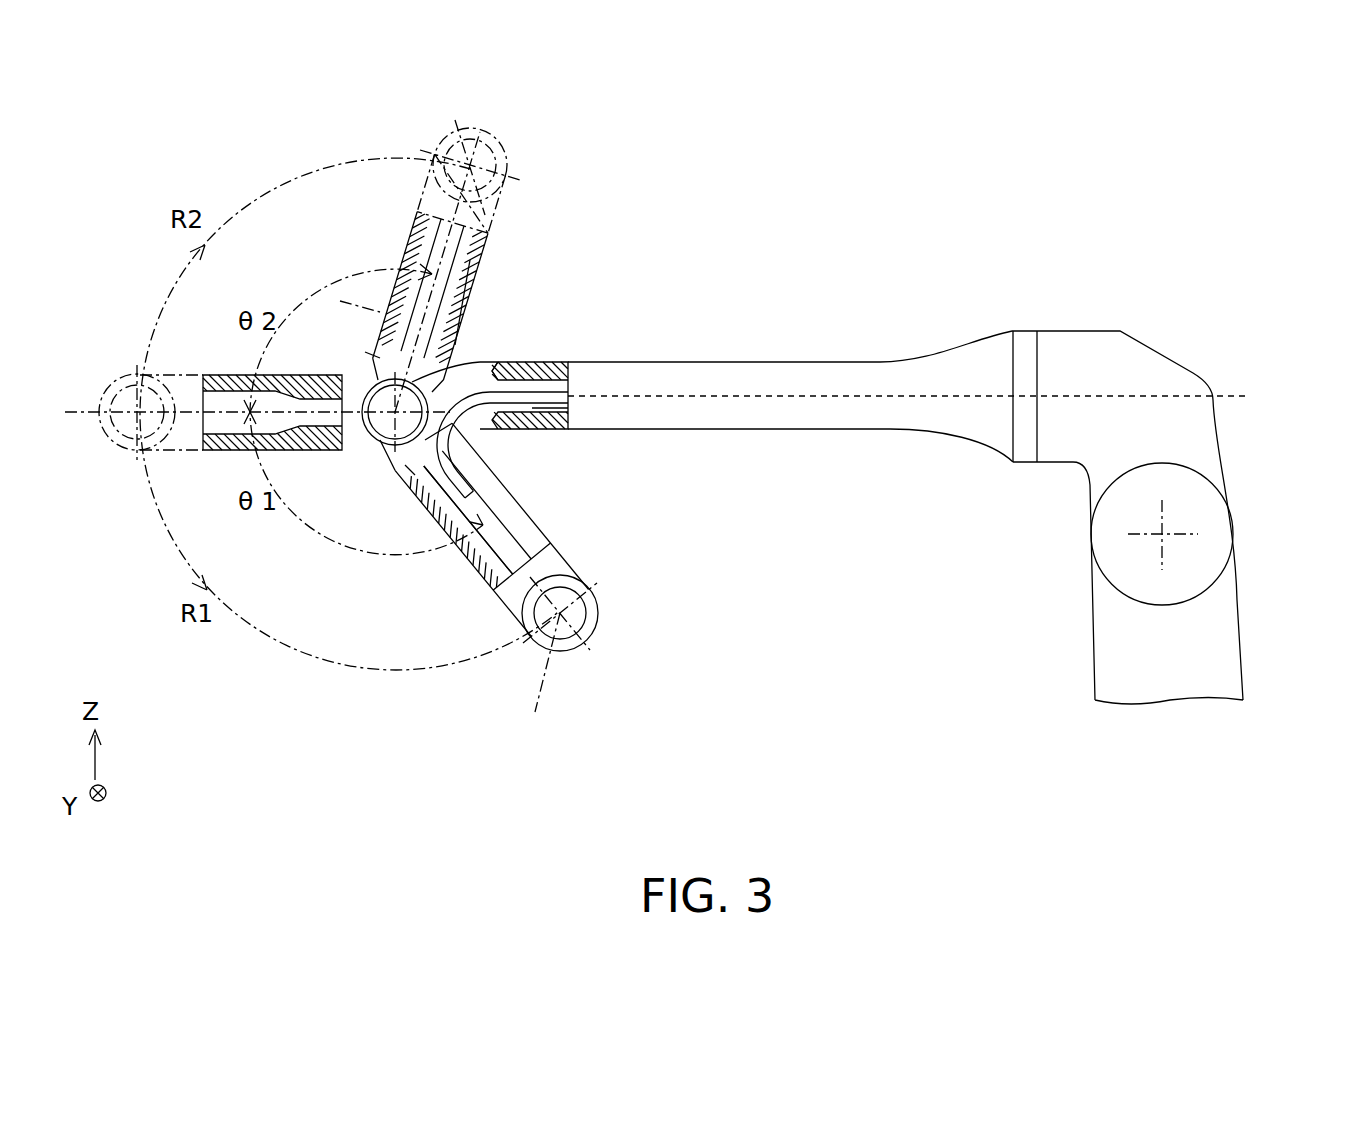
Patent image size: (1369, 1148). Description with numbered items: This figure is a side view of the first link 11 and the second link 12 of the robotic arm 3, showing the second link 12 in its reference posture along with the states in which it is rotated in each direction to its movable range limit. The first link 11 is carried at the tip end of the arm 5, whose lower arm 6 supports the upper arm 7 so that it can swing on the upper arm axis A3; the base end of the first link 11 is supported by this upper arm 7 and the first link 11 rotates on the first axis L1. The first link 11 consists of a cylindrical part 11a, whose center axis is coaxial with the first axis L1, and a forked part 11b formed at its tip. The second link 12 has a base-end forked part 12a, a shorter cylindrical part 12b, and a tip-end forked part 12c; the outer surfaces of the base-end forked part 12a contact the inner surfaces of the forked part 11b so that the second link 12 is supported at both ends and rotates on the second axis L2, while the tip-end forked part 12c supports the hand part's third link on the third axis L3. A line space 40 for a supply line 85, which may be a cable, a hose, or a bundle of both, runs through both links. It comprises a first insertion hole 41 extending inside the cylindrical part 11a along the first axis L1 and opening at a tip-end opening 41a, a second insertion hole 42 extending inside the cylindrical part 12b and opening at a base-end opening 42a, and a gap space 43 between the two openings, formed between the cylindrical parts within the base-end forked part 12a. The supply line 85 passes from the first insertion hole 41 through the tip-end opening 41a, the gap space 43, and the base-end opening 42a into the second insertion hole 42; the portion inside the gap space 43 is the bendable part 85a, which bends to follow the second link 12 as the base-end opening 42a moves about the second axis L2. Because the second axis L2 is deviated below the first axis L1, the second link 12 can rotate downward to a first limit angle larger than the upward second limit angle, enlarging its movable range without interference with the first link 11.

The robotic arm 3 is at (1227, 313).
The arm 5 is at (1305, 460).
The lower arm 6 is at (1240, 600).
The upper arm 7 is at (1215, 465).
The first link 11 is at (855, 360).
The cylindrical part 11a is at (745, 360).
The forked part 11b is at (482, 355).
The second link 12 is at (432, 226).
The base-end forked part 12a is at (385, 470).
The cylindrical part 12b is at (533, 513).
The tip-end forked part 12c is at (570, 560).
The line space 40 is at (497, 440).
The first insertion hole 41 is at (553, 360).
The tip-end opening 41a is at (500, 360).
The second insertion hole 42 is at (462, 600).
The base-end opening 42a is at (400, 455).
The gap space 43 is at (487, 347).
The supply line 85 is at (575, 432).
The bendable part 85a is at (380, 358).
The upper arm axis A3 is at (1162, 534).
The first axis L1 is at (693, 385).
The second axis L2 is at (395, 412).
The third axis L3 is at (536, 733).